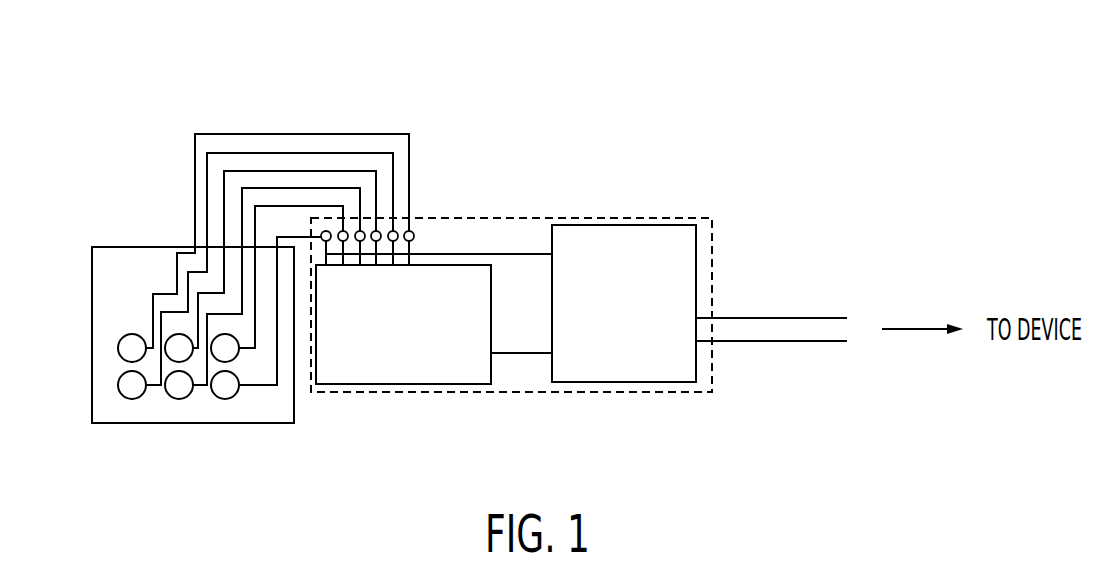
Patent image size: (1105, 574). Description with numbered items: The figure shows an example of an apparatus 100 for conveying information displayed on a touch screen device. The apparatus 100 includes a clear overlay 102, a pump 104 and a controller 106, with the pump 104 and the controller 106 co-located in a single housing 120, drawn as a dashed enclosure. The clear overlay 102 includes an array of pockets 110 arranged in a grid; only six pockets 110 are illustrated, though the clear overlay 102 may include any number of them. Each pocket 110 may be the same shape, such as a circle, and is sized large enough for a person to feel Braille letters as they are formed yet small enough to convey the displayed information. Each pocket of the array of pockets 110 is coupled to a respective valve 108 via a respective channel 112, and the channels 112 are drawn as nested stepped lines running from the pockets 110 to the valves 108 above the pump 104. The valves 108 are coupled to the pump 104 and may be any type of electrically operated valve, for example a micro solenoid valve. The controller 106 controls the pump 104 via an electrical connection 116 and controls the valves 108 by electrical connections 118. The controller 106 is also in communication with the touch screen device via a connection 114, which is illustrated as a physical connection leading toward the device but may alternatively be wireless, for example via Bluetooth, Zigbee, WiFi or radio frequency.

The apparatus 100 is at (574, 100).
The clear overlay 102 is at (157, 423).
The pump 104 is at (397, 384).
The controller 106 is at (622, 382).
The valve 108 is at (412, 230).
The array of pockets 110 is at (118, 350).
The channel 112 is at (305, 133).
The connection 114 is at (795, 318).
The electrical connection 116 is at (509, 355).
The electrical connections 118 is at (517, 254).
The housing 120 is at (627, 217).